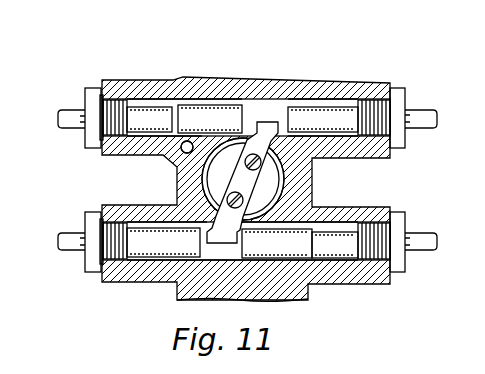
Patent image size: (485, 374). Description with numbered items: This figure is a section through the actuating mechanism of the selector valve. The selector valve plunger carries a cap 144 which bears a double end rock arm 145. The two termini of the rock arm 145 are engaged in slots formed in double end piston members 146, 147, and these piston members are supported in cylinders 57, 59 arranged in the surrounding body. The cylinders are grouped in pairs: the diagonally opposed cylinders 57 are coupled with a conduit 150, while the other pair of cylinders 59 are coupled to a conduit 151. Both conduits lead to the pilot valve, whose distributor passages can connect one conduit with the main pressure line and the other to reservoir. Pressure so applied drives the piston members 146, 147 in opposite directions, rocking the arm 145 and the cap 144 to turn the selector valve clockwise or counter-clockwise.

The cylinder 57 is at (351, 107).
The cylinder 59 is at (140, 112).
The cap 144 is at (213, 175).
The double end rock arm 145 is at (250, 188).
The double end piston member 146 is at (227, 113).
The double end piston member 147 is at (287, 250).
The conduit 150 is at (418, 122).
The conduit 151 is at (72, 117).